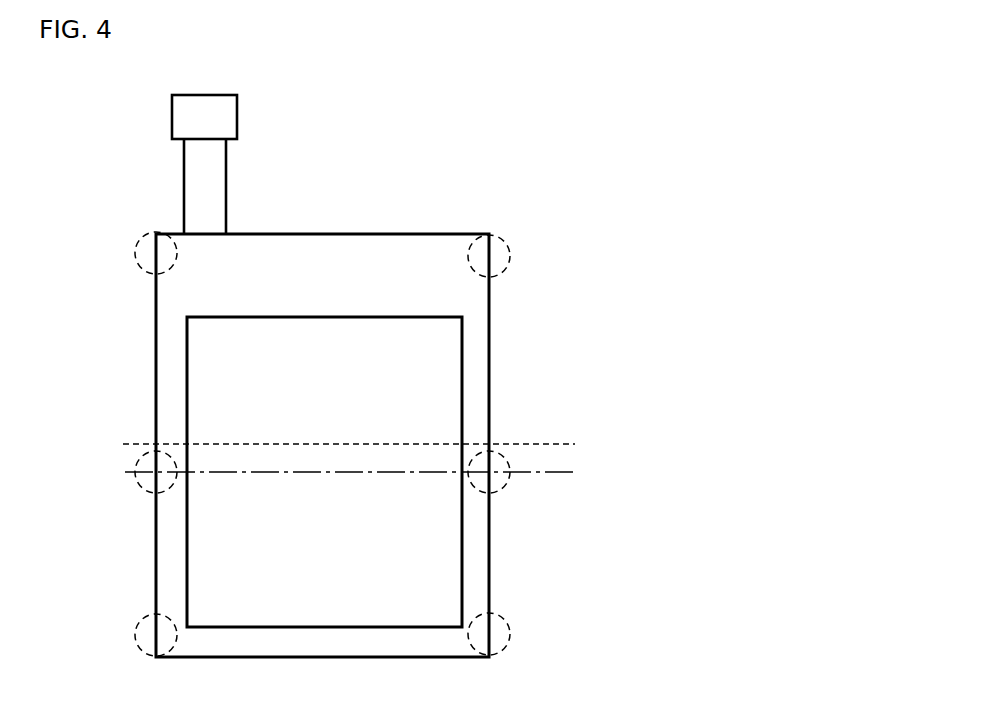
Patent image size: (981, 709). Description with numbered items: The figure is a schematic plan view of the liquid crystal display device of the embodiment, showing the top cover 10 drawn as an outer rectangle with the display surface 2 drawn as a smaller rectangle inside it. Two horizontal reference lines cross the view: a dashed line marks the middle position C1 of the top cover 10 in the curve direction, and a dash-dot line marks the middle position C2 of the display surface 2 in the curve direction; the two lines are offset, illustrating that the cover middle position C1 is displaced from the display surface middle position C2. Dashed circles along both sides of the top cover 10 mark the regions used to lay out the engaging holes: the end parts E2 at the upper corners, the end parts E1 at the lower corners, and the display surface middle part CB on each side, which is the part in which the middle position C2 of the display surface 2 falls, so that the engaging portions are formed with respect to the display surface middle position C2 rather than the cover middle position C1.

The top cover 10 is at (378, 248).
The display surface 2 is at (448, 392).
The end part E2 is at (320, 254).
The end part E1 is at (320, 634).
The display surface middle part CB is at (325, 484).
The middle position of the top cover C1 is at (441, 430).
The middle position of the display surface C2 is at (480, 494).